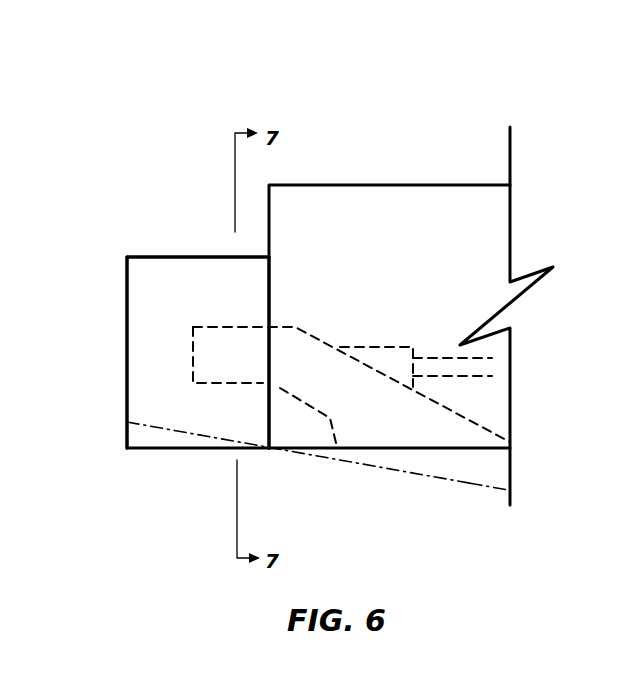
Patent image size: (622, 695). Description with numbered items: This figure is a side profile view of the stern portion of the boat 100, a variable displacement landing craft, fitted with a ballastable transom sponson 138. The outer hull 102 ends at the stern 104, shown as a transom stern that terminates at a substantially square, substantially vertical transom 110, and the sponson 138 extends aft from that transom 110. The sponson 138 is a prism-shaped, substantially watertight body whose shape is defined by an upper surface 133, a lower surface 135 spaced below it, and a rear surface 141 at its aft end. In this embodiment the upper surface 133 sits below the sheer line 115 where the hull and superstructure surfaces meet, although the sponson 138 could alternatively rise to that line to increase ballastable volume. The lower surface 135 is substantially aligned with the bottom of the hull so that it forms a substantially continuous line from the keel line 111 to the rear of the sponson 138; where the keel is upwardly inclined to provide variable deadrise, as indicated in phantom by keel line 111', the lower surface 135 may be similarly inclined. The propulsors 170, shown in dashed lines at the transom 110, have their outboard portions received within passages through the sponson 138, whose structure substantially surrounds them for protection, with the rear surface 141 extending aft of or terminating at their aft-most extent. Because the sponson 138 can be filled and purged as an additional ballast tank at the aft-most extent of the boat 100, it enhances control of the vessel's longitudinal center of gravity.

The boat 100 is at (427, 100).
The outer hull 102 is at (440, 213).
The stern 104 is at (459, 497).
The transom 110 is at (266, 405).
The keel line 111 is at (389, 483).
The keel line 111' is at (506, 535).
The sheer line 115 is at (318, 185).
The upper surface 133 is at (127, 257).
The lower surface 135 is at (150, 448).
The ballastable transom sponson 138 is at (190, 252).
The rear surface 141 is at (127, 353).
The propulsors 170 is at (321, 340).